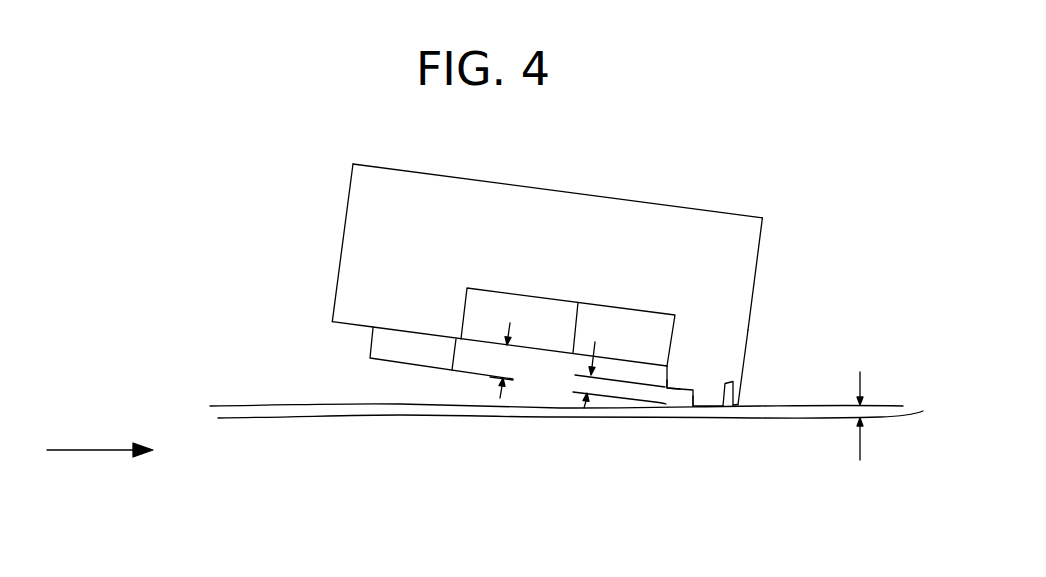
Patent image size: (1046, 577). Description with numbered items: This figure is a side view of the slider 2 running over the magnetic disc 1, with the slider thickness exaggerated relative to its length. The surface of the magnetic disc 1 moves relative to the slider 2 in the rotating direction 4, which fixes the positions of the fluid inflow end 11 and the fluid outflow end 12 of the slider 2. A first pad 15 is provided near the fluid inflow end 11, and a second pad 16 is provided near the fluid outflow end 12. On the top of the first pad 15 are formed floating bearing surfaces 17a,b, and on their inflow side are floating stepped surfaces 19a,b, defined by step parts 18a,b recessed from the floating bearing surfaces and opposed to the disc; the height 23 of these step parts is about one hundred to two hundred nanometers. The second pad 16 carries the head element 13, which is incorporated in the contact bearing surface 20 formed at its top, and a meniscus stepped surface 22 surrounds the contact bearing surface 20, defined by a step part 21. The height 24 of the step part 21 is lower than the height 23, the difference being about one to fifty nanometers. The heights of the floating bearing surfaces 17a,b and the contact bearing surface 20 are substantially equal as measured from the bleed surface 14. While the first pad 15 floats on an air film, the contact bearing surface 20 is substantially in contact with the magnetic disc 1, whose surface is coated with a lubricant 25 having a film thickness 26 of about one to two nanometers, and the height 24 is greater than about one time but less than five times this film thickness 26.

The magnetic disc 1 is at (237, 433).
The slider 2 is at (489, 236).
The rotating direction 4 is at (90, 452).
The fluid inflow end 11 is at (334, 323).
The fluid outflow end 12 is at (738, 412).
The head element 13 is at (740, 372).
The bleed surface 14 is at (610, 304).
The first pad 15 is at (380, 298).
The second pad 16 is at (718, 352).
The floating bearing surfaces 17a,b is at (398, 365).
The step parts 18a,b is at (370, 343).
The floating stepped surfaces 19a,b is at (350, 330).
The contact bearing surface 20 is at (710, 416).
The step part 21 is at (697, 404).
The meniscus stepped surface 22 is at (682, 398).
The height of the step parts 23 is at (480, 380).
The height of the step part 24 is at (580, 409).
The lubricant 25 is at (270, 412).
The film thickness 26 is at (860, 438).